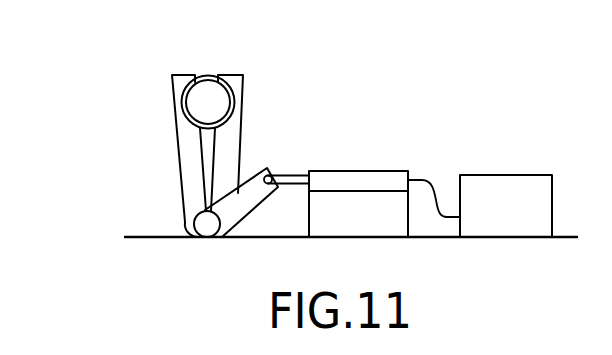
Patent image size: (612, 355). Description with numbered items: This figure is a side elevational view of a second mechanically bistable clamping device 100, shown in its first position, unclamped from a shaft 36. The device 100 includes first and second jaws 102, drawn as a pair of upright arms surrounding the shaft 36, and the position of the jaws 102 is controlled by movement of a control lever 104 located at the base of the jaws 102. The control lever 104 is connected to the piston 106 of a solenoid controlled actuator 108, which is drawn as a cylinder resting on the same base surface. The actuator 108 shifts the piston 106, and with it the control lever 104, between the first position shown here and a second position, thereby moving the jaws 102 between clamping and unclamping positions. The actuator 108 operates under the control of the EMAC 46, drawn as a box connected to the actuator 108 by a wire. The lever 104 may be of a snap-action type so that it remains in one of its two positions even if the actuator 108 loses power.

The roller 36 is at (208, 82).
The EMAC 46 is at (498, 178).
The mechanically bistable clamping device 100 is at (140, 186).
The jaws 102 is at (181, 140).
The control lever 104 is at (256, 204).
The piston 106 is at (291, 177).
The solenoid controlled actuator 108 is at (382, 172).